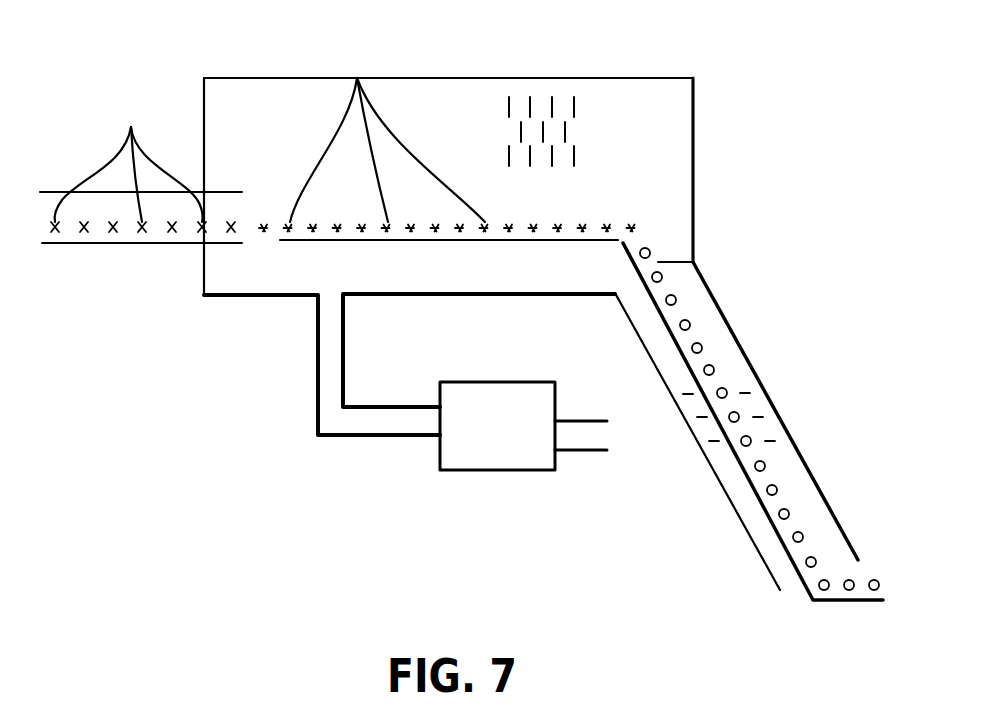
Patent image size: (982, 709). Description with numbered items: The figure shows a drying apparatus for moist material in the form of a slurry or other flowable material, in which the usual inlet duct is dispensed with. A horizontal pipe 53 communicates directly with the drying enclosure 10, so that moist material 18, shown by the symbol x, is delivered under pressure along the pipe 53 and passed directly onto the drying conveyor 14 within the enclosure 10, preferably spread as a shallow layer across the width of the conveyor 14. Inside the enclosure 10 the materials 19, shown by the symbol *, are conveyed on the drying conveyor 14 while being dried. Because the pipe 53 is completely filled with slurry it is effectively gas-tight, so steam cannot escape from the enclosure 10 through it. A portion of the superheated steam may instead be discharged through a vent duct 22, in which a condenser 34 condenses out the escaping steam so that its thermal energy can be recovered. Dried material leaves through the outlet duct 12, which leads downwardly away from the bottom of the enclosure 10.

The drying enclosure 10 is at (502, 78).
The outlet duct 12 is at (735, 338).
The drying conveyor 14 is at (580, 240).
The moist materials 18 is at (129, 158).
The materials being conveyed within the enclosure 19 is at (357, 78).
The vent duct 22 is at (318, 350).
The condenser 34 is at (480, 472).
The horizontal pipe 53 is at (172, 245).